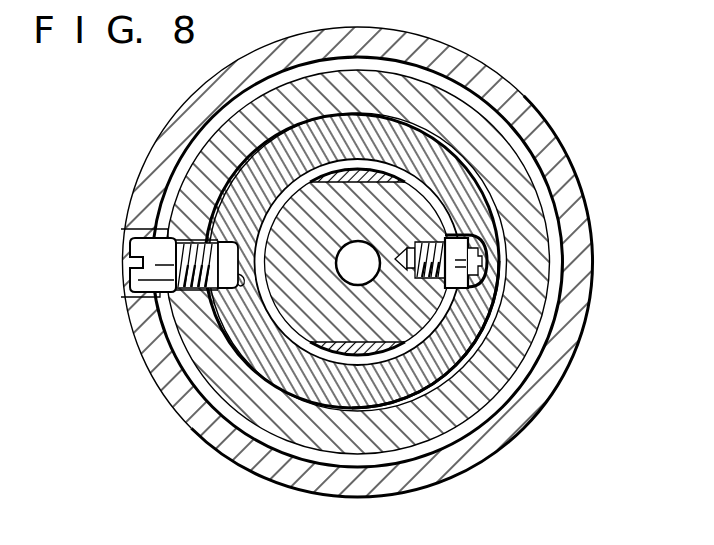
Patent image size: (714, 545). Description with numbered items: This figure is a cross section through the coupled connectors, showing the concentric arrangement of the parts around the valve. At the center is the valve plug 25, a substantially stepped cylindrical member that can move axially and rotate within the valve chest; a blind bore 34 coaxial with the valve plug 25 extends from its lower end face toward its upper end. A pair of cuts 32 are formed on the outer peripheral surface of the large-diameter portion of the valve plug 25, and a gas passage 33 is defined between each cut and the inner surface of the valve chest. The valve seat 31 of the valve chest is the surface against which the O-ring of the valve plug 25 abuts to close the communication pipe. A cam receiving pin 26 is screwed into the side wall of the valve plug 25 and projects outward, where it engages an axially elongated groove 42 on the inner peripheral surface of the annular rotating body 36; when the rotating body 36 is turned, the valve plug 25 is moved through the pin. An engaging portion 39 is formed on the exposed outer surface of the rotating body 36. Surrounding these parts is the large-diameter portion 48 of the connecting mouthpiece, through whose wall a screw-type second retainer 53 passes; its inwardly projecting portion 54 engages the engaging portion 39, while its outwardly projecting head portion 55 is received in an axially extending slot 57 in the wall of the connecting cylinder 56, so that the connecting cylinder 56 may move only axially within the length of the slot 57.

The valve plug 25 is at (463, 192).
The cam receiving pin 26 is at (487, 257).
The valve seat 31 is at (432, 185).
The cuts 32 is at (376, 181).
The gas passage 33 is at (343, 162).
The blind bore 34 is at (346, 259).
The rotating body 36 is at (524, 378).
The engaging portion 39 is at (268, 287).
The groove 42 is at (487, 264).
The large-diameter portion 48 is at (420, 458).
The second retainer 53 is at (215, 292).
The projecting portion 54 is at (212, 229).
The head portion 55 is at (130, 251).
The connecting cylinder 56 is at (585, 316).
The slot 57 is at (130, 279).